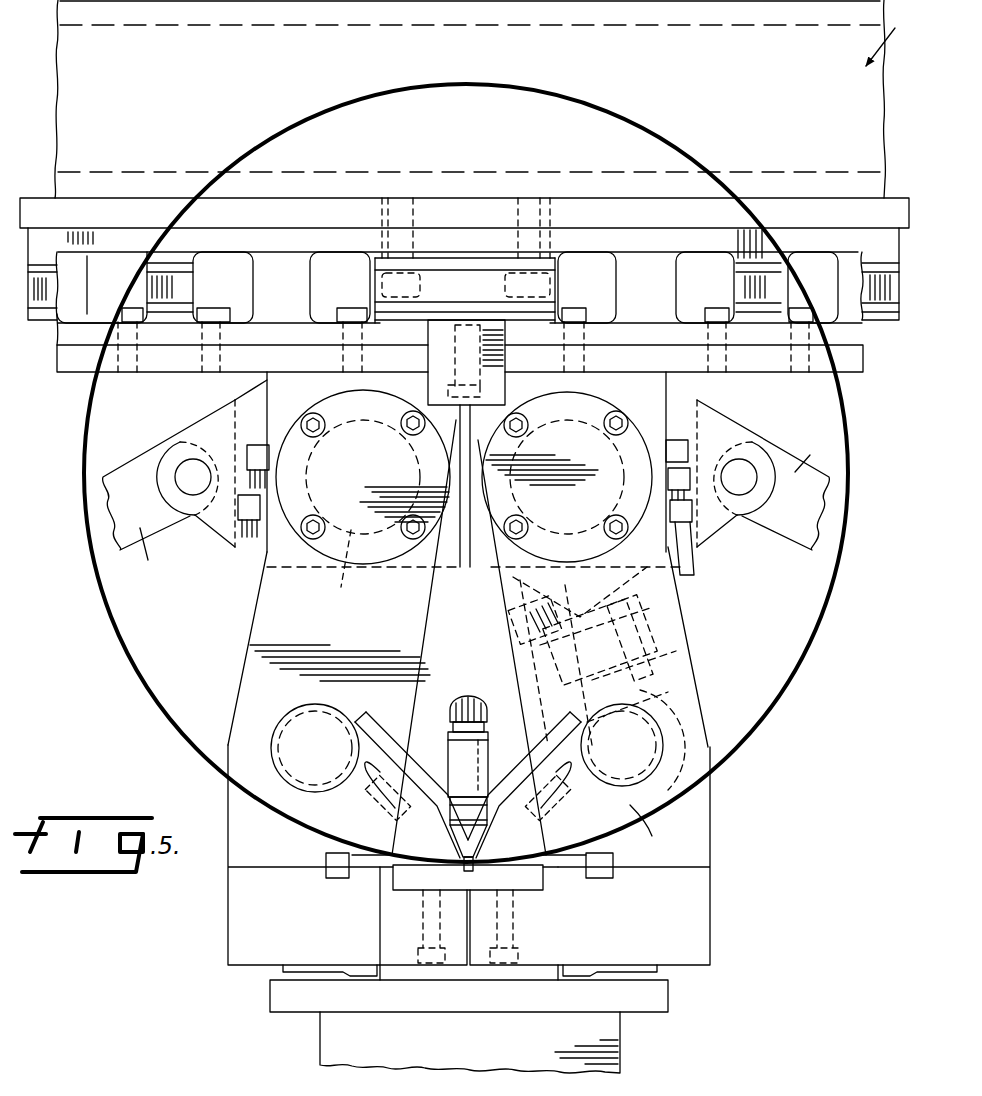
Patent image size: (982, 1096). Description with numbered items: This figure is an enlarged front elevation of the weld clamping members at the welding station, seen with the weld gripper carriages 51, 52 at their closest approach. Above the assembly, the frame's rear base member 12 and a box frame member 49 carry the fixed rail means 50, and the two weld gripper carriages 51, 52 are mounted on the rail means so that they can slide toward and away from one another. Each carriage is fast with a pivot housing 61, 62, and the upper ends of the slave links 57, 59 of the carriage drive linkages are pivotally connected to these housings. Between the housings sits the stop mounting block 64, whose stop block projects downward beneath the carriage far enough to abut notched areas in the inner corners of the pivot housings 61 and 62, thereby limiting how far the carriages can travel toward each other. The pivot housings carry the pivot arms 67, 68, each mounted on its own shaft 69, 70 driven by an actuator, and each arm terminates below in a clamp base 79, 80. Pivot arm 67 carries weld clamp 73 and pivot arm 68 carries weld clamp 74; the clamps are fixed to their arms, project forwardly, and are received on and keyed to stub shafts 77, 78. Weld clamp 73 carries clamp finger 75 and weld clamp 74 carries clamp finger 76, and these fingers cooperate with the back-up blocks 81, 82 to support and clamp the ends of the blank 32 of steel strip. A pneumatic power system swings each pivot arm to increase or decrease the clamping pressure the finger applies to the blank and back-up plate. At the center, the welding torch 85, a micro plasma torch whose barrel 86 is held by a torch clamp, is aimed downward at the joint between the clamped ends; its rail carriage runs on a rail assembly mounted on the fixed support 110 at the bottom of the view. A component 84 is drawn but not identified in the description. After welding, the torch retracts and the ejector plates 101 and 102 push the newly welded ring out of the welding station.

The rear base member 12 is at (891, 33).
The blank 32 is at (818, 633).
The box frame member 49 is at (80, 72).
The fixed rail means 50 is at (885, 322).
The weld gripper carriage 51 is at (862, 332).
The weld gripper carriage 52 is at (58, 346).
The slave link 57 is at (805, 447).
The slave link 59 is at (155, 556).
The pivot housing 61 is at (270, 386).
The pivot housing 62 is at (655, 420).
The stop mounting block 64 is at (485, 332).
The pivot arm 67 is at (262, 615).
The pivot arm 68 is at (695, 682).
The shaft 69 is at (340, 578).
The shaft 70 is at (604, 412).
The weld clamp 73 is at (372, 742).
The weld clamp 74 is at (658, 828).
The clamp finger 75 is at (413, 800).
The clamp finger 76 is at (514, 808).
The stub shaft 77 is at (298, 705).
The stub shaft 78 is at (686, 712).
The clamp base 79 is at (242, 932).
The clamp base 80 is at (700, 928).
The back-up block 81 is at (420, 888).
The back-up block 82 is at (532, 882).
The cam mechanism 84 is at (612, 618).
The welding torch 85 is at (471, 692).
The barrel 86 is at (456, 736).
The ejector plate 101 is at (386, 872).
The ejector plate 102 is at (550, 870).
The fixed support 110 is at (614, 1053).